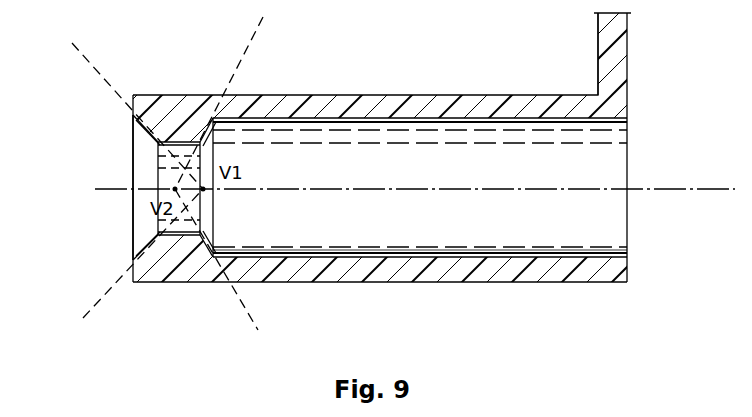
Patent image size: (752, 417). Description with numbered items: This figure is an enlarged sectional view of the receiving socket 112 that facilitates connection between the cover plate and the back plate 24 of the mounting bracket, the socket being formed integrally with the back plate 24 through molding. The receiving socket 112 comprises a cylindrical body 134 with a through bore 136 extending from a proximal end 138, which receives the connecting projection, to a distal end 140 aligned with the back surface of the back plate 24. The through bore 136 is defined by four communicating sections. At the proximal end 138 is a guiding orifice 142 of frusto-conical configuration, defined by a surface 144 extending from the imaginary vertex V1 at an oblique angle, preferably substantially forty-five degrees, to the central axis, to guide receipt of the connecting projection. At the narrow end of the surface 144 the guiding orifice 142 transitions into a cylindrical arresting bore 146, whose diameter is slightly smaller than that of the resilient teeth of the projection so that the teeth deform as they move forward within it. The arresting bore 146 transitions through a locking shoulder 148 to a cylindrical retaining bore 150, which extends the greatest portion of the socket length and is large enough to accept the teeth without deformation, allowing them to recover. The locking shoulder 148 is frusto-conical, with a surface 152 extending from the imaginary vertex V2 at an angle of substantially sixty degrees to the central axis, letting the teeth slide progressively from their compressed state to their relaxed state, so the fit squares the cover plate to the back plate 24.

The receiving socket 112 is at (461, 90).
The back plate 24 is at (612, 41).
The cylindrical body 134 is at (392, 107).
The through bore 136 is at (638, 163).
The proximal end 138 is at (132, 148).
The distal end 140 is at (627, 265).
The guiding orifice 142 is at (145, 222).
The frusto-conical surface 144 is at (135, 112).
The arresting bore 146 is at (183, 228).
The locking shoulder 148 is at (213, 152).
The retaining bore 150 is at (563, 228).
The frusto-conical surface 152 is at (212, 246).